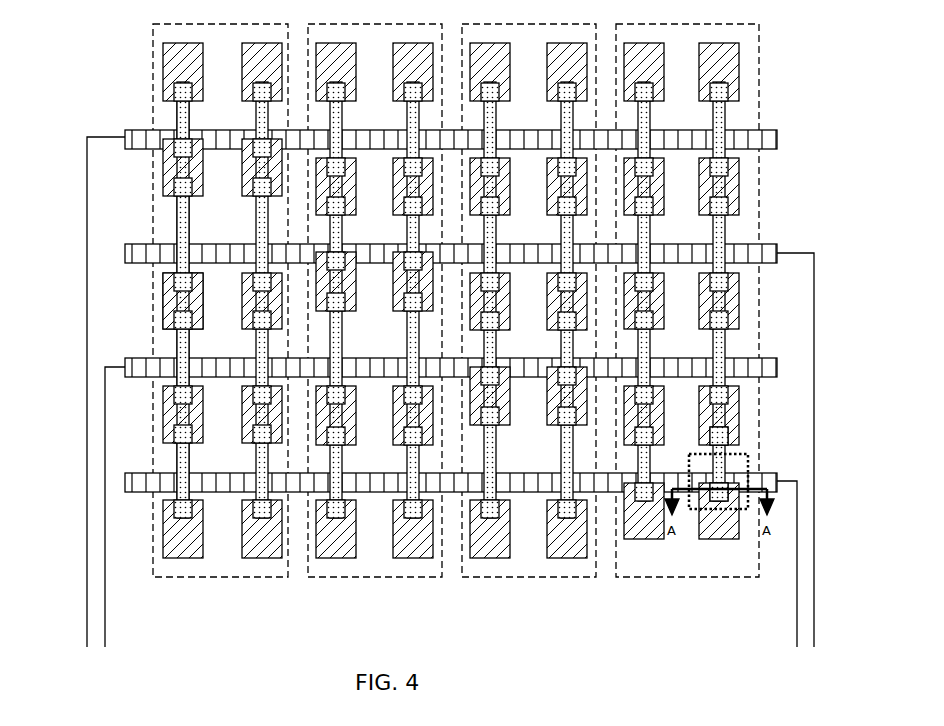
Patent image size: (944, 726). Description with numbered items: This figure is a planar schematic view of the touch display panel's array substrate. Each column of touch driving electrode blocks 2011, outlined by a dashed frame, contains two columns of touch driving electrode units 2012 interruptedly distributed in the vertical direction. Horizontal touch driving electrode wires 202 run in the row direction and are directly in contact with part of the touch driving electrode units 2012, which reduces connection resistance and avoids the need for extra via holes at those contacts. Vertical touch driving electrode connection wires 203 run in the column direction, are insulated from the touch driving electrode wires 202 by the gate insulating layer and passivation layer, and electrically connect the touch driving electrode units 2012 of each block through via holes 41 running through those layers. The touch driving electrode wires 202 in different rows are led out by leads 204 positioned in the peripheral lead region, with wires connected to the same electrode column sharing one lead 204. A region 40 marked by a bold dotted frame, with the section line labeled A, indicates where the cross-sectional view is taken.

The touch driving electrode block 2011 is at (155, 42).
The touch driving electrode wire 202 is at (137, 137).
The touch driving electrode connection wire 203 is at (182, 235).
The touch driving electrode unit 2012 is at (165, 303).
The lead 204 is at (87, 406).
The via hole 41 is at (723, 427).
The region 40 is at (737, 463).